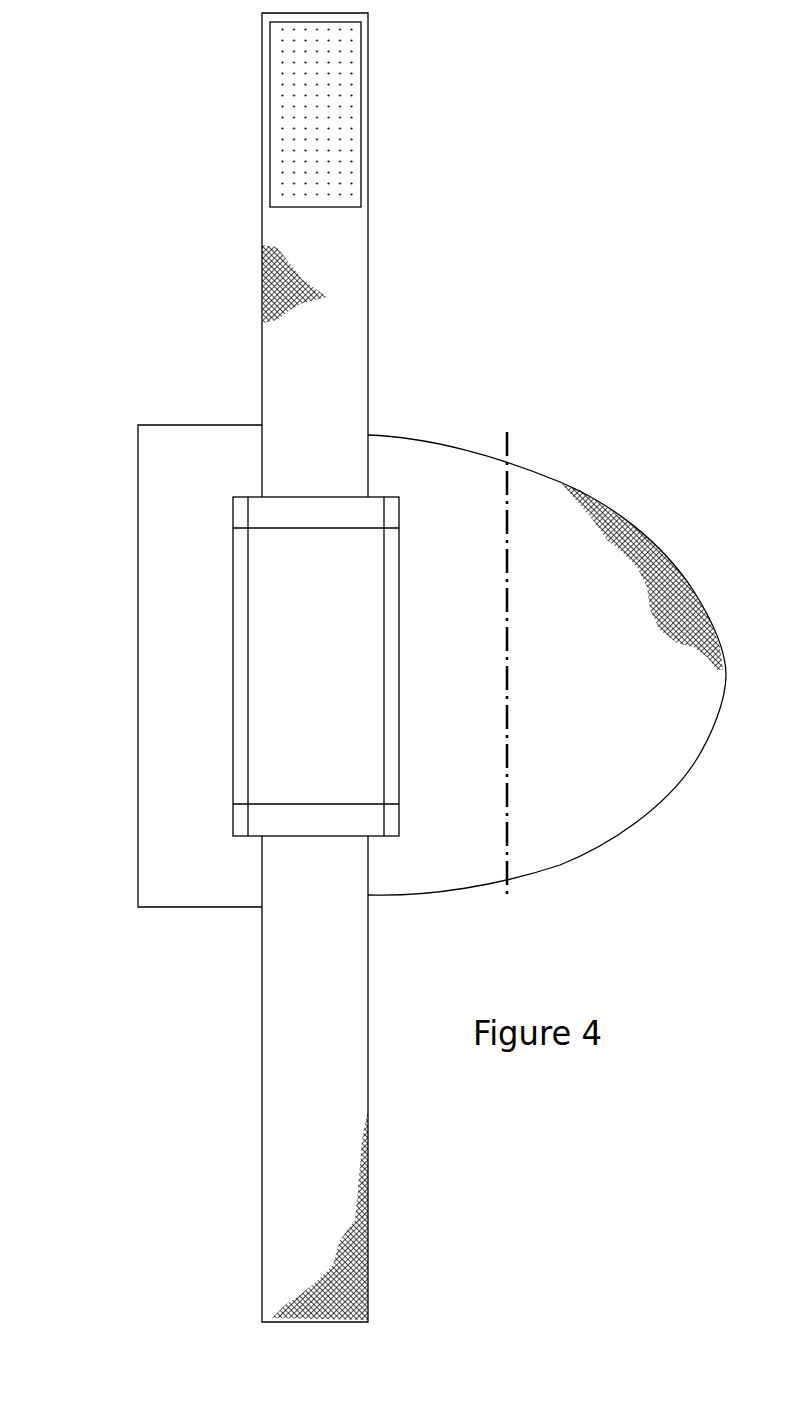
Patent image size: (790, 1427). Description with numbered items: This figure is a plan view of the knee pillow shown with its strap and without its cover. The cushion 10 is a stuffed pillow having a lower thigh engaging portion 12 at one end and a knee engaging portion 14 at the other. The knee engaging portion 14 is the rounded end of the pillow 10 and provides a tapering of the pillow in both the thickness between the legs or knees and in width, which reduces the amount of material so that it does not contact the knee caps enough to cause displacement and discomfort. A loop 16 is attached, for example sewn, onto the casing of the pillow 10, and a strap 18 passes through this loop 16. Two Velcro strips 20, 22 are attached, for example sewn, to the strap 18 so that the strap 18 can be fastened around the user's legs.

The cushion 10 is at (120, 611).
The lower thigh engaging portion 12 is at (200, 675).
The knee engaging portion 14 is at (615, 679).
The loop 16 is at (330, 595).
The strap 18 is at (280, 227).
The Velcro strip 20 is at (313, 80).
The Velcro strip 22 is at (308, 1217).